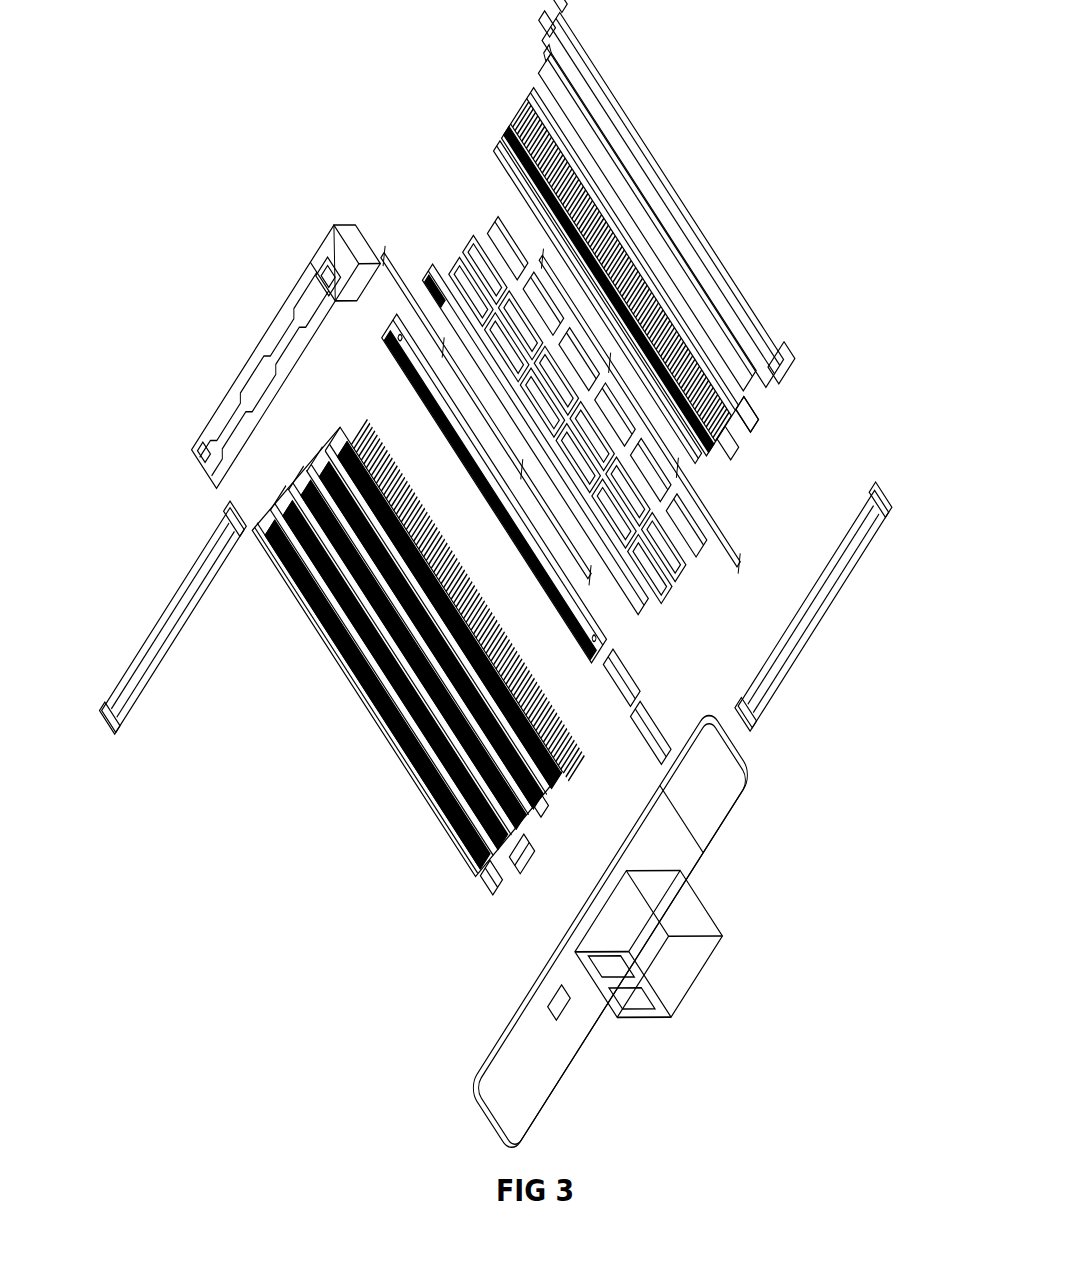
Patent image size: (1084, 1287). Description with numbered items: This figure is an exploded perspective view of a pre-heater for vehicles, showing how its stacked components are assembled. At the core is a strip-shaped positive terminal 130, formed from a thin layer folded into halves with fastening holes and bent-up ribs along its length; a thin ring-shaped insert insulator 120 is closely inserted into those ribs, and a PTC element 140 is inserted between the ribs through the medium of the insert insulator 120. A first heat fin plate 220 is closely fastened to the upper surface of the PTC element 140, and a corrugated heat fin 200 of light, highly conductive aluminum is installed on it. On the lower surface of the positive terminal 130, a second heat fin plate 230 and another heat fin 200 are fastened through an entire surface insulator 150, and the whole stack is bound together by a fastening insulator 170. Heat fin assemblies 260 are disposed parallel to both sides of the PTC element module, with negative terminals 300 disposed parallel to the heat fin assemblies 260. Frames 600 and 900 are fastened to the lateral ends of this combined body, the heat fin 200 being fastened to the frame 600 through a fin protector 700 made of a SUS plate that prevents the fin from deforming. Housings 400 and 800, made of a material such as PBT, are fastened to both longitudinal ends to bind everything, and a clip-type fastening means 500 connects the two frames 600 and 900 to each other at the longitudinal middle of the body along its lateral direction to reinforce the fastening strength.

The insert insulator 120 is at (470, 250).
The positive terminal 130 is at (457, 252).
The PTC element 140 is at (487, 217).
The entire surface insulator 150 is at (435, 280).
The fastening insulator 170 is at (387, 250).
The heat fin 200 is at (510, 130).
The first heat fin plate 220 is at (505, 137).
The second heat fin plate 230 is at (624, 680).
The heat fin assembly 260 is at (452, 127).
The negative terminal 300 is at (350, 372).
The housing 400 is at (700, 827).
The fastening means 500 is at (187, 587).
The frame 600 is at (677, 197).
The fin protector 700 is at (553, 72).
The housing 800 is at (243, 370).
The frame 900 is at (360, 722).